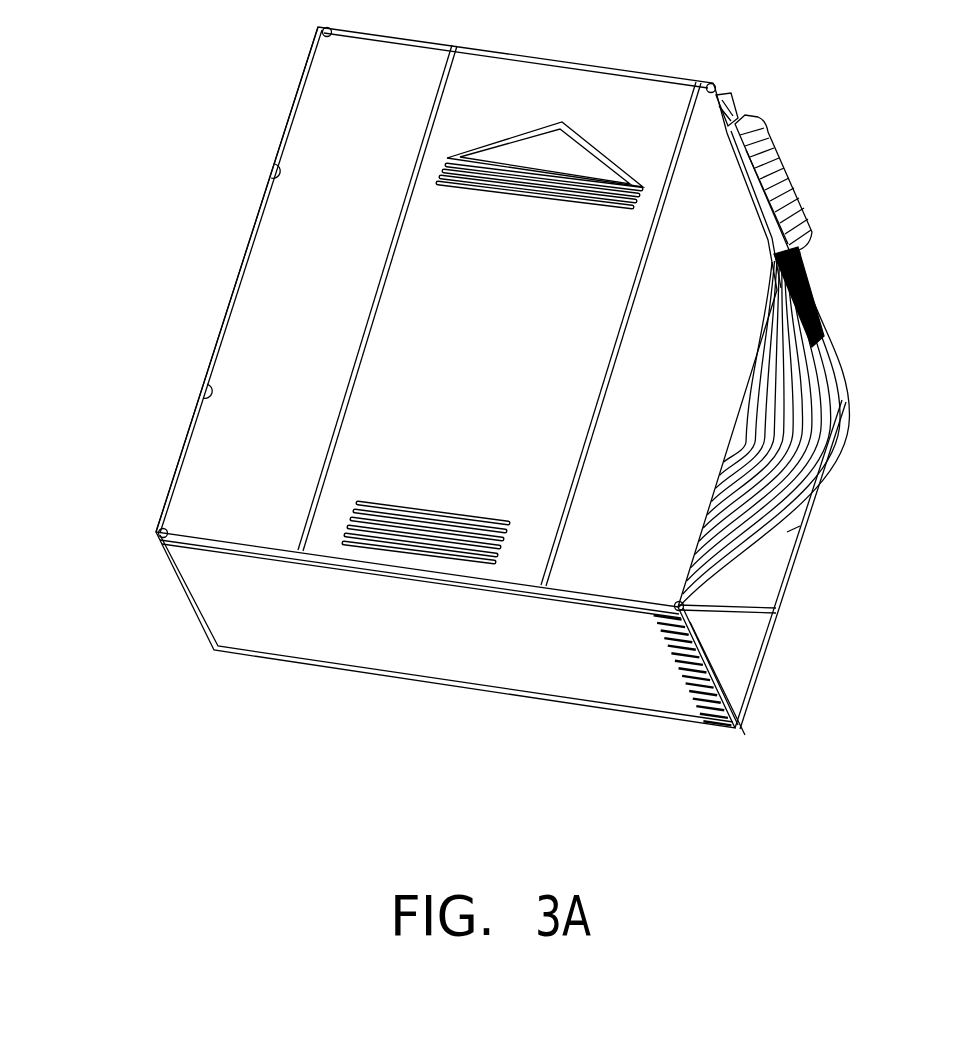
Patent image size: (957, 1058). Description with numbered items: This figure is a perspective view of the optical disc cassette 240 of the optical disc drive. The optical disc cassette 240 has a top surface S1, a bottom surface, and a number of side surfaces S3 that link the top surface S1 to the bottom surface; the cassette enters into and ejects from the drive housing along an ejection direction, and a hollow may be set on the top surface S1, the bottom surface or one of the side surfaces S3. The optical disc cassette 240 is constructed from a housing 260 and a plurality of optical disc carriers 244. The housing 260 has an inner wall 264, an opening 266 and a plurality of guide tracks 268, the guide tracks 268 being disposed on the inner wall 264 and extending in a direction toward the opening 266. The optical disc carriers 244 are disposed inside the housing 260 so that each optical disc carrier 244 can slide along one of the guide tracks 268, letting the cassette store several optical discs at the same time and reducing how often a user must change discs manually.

The optical disc cassette 240 is at (826, 798).
The top surface S1 is at (314, 267).
The side surface S3 is at (224, 306).
The housing 260 is at (236, 622).
The optical disc carrier 244 is at (805, 458).
The opening 266 is at (818, 508).
The guide track 268 is at (722, 650).
The inner wall 264 is at (722, 672).